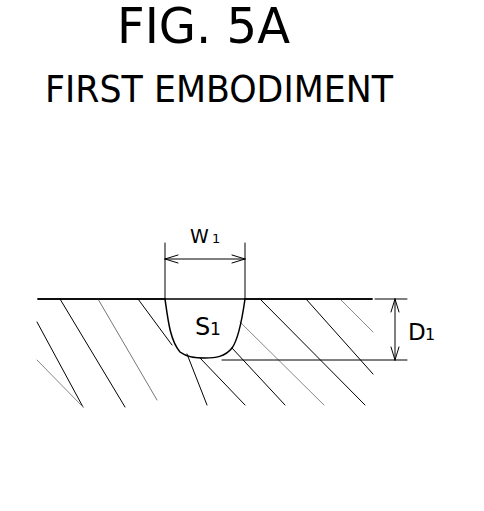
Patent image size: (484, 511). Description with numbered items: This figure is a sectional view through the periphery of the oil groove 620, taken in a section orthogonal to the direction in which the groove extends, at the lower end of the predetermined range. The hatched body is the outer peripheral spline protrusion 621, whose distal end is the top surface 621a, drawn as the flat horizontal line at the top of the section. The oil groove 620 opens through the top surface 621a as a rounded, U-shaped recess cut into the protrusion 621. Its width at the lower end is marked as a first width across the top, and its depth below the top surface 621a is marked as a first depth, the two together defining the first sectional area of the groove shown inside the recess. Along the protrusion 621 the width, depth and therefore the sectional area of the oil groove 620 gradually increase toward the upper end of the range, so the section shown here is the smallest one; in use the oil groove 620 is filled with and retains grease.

The oil groove 620 is at (189, 353).
The outer peripheral spline protrusion 621 is at (298, 315).
The top surface 621a is at (113, 299).